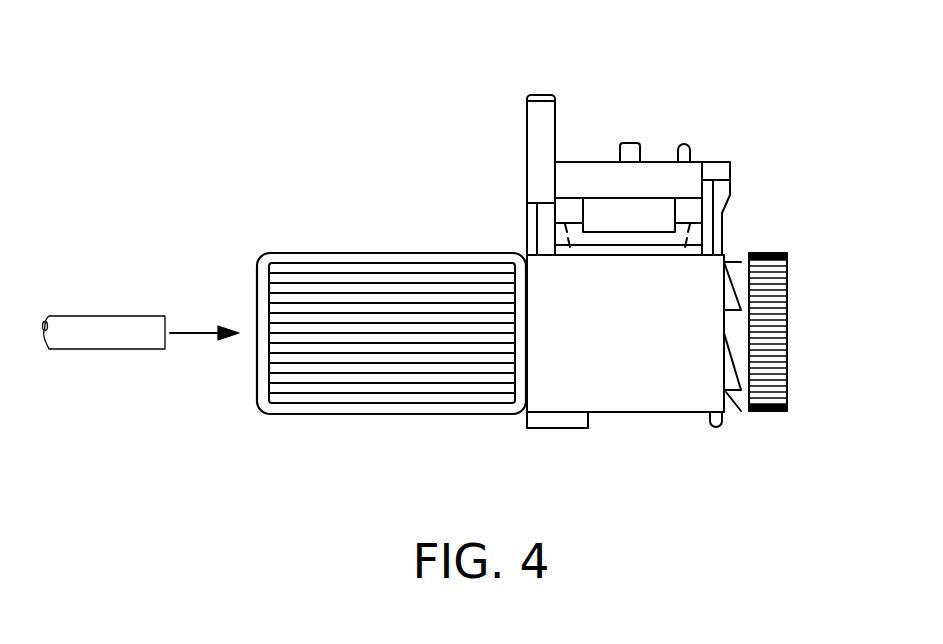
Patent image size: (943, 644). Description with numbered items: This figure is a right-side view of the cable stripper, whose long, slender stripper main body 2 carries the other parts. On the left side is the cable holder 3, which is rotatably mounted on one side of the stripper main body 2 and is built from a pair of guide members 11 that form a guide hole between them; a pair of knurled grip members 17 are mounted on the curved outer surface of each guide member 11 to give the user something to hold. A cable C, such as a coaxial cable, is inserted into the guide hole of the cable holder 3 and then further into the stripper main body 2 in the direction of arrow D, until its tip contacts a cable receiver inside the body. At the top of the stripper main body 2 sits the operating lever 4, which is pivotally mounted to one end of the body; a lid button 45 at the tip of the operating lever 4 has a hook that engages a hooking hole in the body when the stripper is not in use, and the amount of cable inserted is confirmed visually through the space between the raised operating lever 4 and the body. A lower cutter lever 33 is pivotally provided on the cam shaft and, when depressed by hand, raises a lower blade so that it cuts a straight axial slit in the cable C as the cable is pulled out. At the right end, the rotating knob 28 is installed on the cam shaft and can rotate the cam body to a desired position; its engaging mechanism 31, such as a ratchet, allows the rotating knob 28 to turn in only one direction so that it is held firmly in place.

The stripper main body 2 is at (653, 415).
The cable holder 3 is at (391, 327).
The operating lever 4 is at (642, 168).
The guide members 11 is at (305, 408).
The knurled grip members 17 is at (455, 400).
The rotating knob 28 is at (787, 377).
The engaging mechanism 31 is at (733, 283).
The lower cutter lever 33 is at (545, 93).
The lid button 45 is at (648, 203).
The cable C is at (96, 338).
The direction of arrow D is at (203, 336).